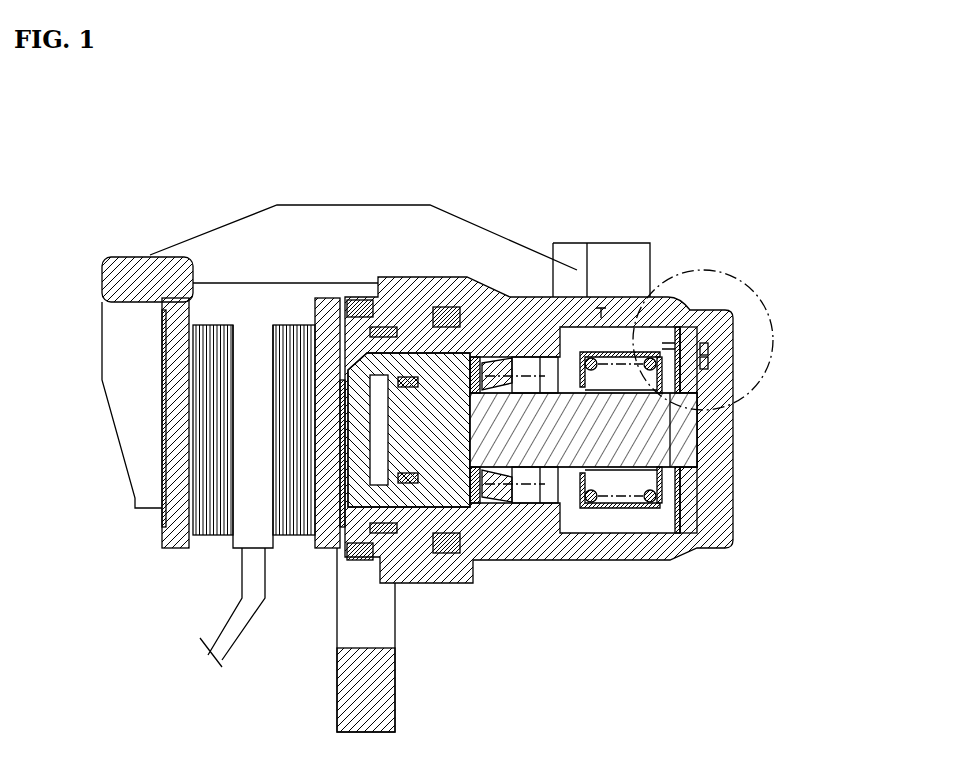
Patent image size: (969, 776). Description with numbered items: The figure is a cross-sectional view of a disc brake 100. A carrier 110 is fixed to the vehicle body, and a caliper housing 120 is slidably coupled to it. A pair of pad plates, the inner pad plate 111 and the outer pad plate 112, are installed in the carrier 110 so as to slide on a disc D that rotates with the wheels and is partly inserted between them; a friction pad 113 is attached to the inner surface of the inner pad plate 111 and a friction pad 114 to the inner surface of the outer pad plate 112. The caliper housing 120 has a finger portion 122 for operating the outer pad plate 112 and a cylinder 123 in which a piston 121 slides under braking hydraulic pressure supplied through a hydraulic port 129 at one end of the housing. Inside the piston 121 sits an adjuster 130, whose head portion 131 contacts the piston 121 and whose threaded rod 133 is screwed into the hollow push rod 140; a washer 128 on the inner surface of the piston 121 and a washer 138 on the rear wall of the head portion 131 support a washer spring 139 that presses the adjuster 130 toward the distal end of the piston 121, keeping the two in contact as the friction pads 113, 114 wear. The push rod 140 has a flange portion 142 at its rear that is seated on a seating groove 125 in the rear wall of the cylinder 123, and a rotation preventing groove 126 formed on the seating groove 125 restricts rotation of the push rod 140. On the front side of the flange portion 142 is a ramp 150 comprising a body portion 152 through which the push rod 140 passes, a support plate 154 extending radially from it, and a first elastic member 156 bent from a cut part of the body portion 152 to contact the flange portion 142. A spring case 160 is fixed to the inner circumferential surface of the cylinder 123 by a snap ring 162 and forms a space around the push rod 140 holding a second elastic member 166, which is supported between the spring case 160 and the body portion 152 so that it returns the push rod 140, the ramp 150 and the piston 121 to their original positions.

The disc brake 100 is at (545, 170).
The carrier 110 is at (352, 667).
The inner pad plate 111 is at (332, 550).
The outer pad plate 112 is at (172, 550).
The friction pad 113 is at (286, 538).
The friction pad 114 is at (212, 536).
The caliper housing 120 is at (369, 205).
The piston 121 is at (436, 547).
The finger portion 122 is at (123, 413).
The cylinder 123 is at (553, 300).
The seating groove 125 is at (688, 445).
The rotation preventing groove 126 is at (690, 533).
The washer 128 is at (552, 312).
The hydraulic port 129 is at (605, 318).
The adjuster 130 is at (504, 518).
The head portion 131 is at (485, 548).
The rod 133 is at (545, 545).
The washer 138 is at (488, 370).
The washer spring 139 is at (522, 350).
The push rod 140 is at (585, 490).
The flange portion 142 is at (697, 470).
The ramp 150 is at (758, 340).
The body portion 152 is at (705, 348).
The support plate 154 is at (690, 333).
The first elastic member 156 is at (690, 371).
The spring case 160 is at (608, 515).
The snap ring 162 is at (660, 540).
The second elastic member 166 is at (632, 512).
The disc D is at (204, 650).